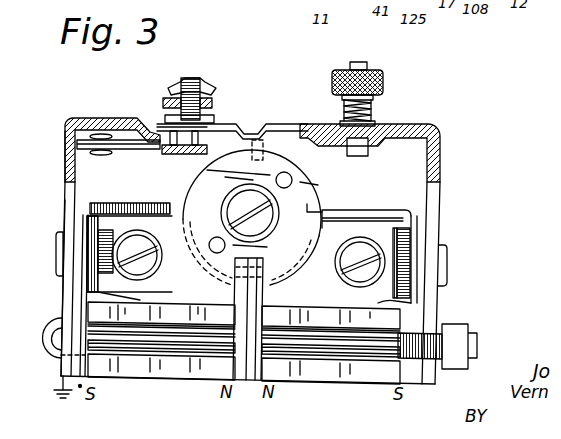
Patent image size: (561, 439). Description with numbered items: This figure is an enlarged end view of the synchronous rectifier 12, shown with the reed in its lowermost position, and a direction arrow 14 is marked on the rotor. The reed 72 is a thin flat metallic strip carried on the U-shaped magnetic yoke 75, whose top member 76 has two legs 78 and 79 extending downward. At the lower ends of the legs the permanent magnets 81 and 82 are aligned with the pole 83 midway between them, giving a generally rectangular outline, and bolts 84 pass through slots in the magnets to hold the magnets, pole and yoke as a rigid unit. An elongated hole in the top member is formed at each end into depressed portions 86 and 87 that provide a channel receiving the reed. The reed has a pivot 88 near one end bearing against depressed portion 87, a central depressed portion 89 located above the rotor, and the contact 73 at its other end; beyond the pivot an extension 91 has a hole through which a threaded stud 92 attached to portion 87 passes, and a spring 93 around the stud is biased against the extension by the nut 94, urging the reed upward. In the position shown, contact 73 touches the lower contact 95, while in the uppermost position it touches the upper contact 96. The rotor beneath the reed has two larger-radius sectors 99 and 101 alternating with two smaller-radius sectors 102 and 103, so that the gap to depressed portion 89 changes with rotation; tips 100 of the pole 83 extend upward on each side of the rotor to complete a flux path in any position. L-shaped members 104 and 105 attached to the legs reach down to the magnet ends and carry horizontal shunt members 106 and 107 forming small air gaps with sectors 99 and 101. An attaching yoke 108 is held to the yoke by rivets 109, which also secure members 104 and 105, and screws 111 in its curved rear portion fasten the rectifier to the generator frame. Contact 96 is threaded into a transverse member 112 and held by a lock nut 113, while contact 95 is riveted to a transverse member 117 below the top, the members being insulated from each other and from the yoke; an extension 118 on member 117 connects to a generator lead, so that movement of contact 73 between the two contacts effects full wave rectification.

The rectifier 12 is at (472, 169).
The pole piece arc direction 14 is at (300, 265).
The reed 72 is at (277, 124).
The contact 73 is at (222, 124).
The magnetic yoke 75 is at (440, 133).
The top member 76 is at (58, 135).
The leg 78 is at (441, 217).
The leg 79 is at (63, 209).
The permanent magnet 81 is at (338, 382).
The permanent magnet 82 is at (183, 379).
The pole 83 is at (256, 381).
The bolt 84 is at (478, 344).
The depressed portion 86 is at (145, 135).
The depressed portion 87 is at (370, 152).
The pivot 88 is at (325, 130).
The depressed portion 89 is at (257, 134).
The extension 91 is at (382, 126).
The threaded stud 92 is at (360, 62).
The spring 93 is at (375, 108).
The nut 94 is at (380, 78).
The contact 95 is at (174, 146).
The contact 96 is at (194, 78).
The sector 99 is at (305, 176).
The tip 100 is at (232, 262).
The sector 101 is at (205, 250).
The sector 102 is at (275, 264).
The sector 103 is at (192, 205).
The L-shaped member 104 is at (415, 237).
The L-shaped member 105 is at (83, 231).
The shunt member 106 is at (395, 212).
The shunt member 107 is at (97, 203).
The attaching yoke 108 is at (405, 298).
The rivet 109 is at (447, 266).
The screw 111 is at (356, 274).
The transverse member 112 is at (163, 102).
The lock nut 113 is at (203, 82).
The transverse member 117 is at (176, 154).
The extension 118 is at (123, 148).